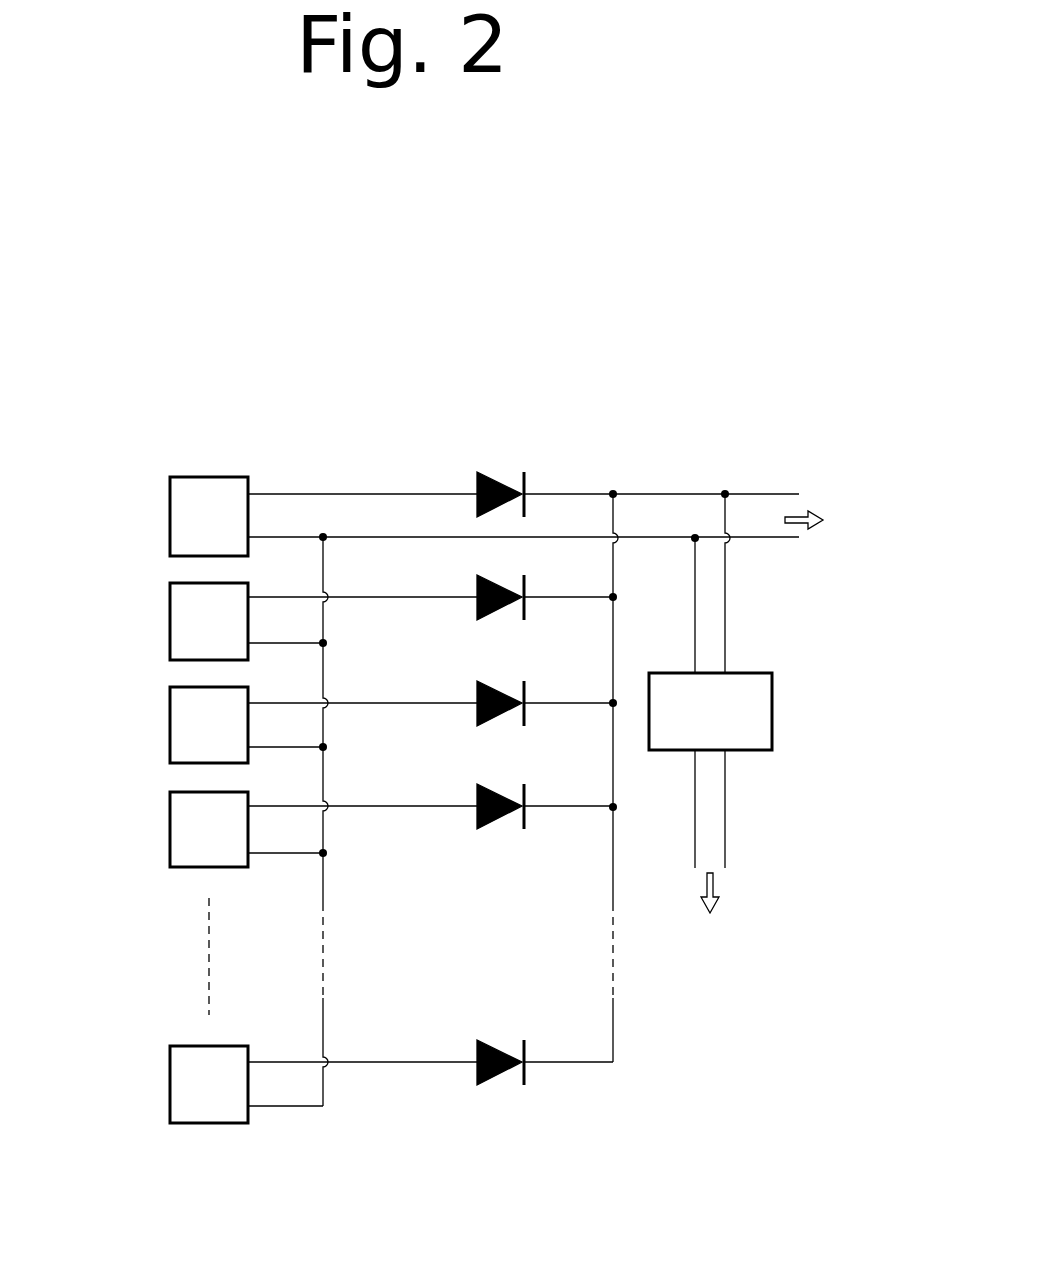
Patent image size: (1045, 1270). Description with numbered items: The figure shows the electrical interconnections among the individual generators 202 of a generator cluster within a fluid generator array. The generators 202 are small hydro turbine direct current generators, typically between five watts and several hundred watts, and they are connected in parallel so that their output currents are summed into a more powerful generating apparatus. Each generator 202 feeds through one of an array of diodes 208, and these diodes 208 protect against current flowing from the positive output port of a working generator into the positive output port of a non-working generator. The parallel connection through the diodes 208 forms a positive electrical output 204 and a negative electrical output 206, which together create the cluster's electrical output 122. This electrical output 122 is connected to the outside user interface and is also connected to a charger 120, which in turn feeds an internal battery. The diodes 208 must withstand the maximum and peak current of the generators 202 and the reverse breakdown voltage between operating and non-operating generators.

The generators 202 is at (148, 791).
The diodes 208 is at (484, 757).
The positive electrical output 204 is at (657, 492).
The negative electrical output 206 is at (754, 543).
The charger 120 is at (785, 717).
The electrical output 122 is at (857, 490).